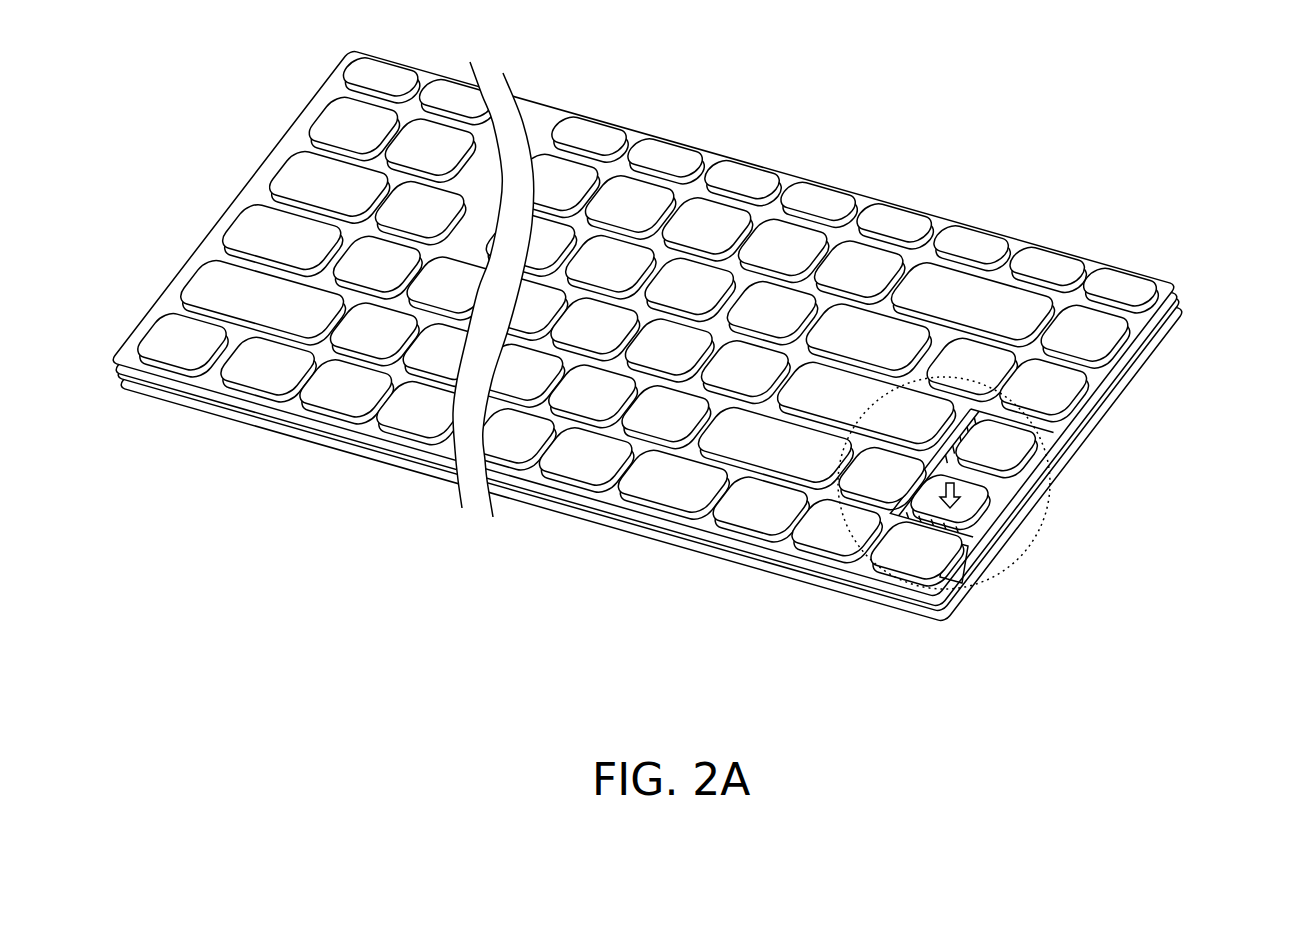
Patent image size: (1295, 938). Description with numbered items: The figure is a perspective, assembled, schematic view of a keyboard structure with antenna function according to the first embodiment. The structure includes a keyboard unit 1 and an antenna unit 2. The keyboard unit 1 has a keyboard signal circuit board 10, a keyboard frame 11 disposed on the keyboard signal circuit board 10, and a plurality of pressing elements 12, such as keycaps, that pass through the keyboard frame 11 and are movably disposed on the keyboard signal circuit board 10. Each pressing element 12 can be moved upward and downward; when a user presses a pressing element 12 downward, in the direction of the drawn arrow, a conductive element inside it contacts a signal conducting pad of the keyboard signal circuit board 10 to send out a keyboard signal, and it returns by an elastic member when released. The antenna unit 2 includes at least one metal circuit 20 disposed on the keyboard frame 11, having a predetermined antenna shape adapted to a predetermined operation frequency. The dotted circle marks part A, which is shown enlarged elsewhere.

The keyboard unit 1 is at (702, 336).
The keyboard signal circuit board 10 is at (1134, 372).
The keyboard frame 11 is at (1132, 343).
The pressing element 12 is at (1128, 297).
The antenna unit 2 is at (1006, 498).
The metal circuit 20 is at (955, 562).
The part A is at (1043, 522).